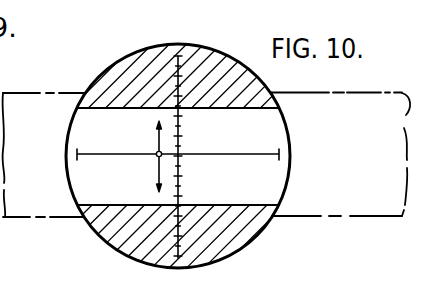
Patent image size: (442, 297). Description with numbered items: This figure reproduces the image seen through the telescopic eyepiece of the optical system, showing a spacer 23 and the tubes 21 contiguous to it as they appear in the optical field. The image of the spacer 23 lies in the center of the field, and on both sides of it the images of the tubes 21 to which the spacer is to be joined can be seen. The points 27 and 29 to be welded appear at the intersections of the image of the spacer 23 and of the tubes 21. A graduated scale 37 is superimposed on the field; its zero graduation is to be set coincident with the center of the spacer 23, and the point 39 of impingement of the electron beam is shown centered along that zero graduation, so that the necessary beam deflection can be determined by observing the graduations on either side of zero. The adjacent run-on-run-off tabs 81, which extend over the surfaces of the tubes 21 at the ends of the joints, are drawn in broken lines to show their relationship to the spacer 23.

The tubes 21 is at (270, 88).
The spacer 23 is at (282, 124).
The point to be welded 27 is at (257, 103).
The point to be welded 29 is at (234, 150).
The graduated scale 37 is at (181, 141).
The point of impingement of the electron beam 39 is at (157, 158).
The run-on-run-off tabs 81 is at (67, 218).